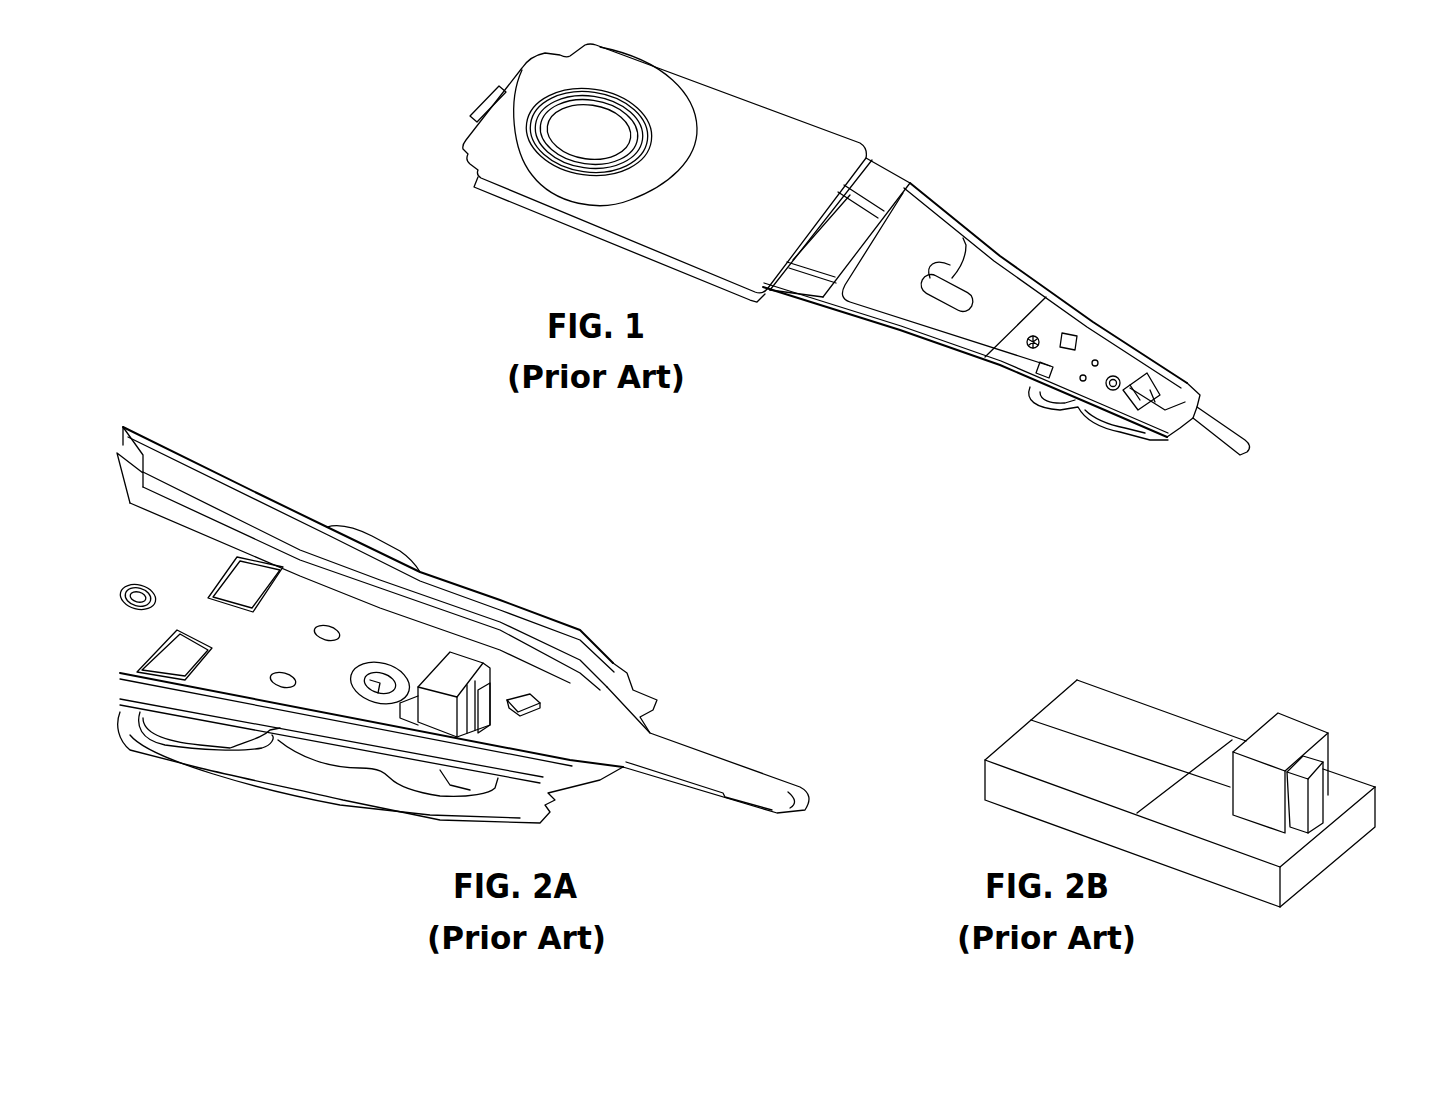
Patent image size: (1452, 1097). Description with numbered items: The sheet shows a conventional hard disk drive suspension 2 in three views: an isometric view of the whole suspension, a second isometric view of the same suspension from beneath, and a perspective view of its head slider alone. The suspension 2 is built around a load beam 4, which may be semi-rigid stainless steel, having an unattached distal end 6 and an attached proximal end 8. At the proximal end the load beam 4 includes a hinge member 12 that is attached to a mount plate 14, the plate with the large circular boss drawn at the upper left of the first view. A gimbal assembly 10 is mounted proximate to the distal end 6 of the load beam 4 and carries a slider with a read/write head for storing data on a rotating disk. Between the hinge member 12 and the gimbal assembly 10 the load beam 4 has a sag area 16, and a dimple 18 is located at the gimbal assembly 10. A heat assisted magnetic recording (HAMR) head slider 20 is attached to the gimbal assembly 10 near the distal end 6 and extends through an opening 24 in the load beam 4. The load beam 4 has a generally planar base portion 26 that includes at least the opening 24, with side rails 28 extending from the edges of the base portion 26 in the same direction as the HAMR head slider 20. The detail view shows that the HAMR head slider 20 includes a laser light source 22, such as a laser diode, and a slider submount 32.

In FIG. 1, the hard disk drive suspension 2 is at (1028, 192).
In FIG. 2A, the hard disk drive suspension 2 is at (458, 556).
In FIG. 1, the load beam 4 is at (1013, 262).
In FIG. 2A, the load beam 4 is at (257, 492).
In FIG. 1, the distal end 6 is at (1209, 365).
In FIG. 1, the proximal end 8 is at (823, 325).
In FIG. 1, the gimbal assembly 10 is at (1110, 425).
In FIG. 1, the hinge member 12 is at (888, 190).
In FIG. 1, the mount plate 14 is at (779, 108).
In FIG. 1, the sag area 16 is at (1048, 325).
In FIG. 1, the dimple 18 is at (1118, 380).
In FIG. 2A, the HAMR head slider 20 is at (457, 652).
In FIG. 2B, the HAMR head slider 20 is at (1097, 690).
In FIG. 2A, the laser light source 22 is at (482, 695).
In FIG. 2B, the laser light source 22 is at (1313, 770).
In FIG. 2A, the opening 24 is at (523, 698).
In FIG. 2A, the base portion 26 is at (387, 650).
In FIG. 2A, the side rails 28 is at (345, 558).
In FIG. 2A, the slider submount 32 is at (473, 660).
In FIG. 2B, the slider submount 32 is at (1290, 730).